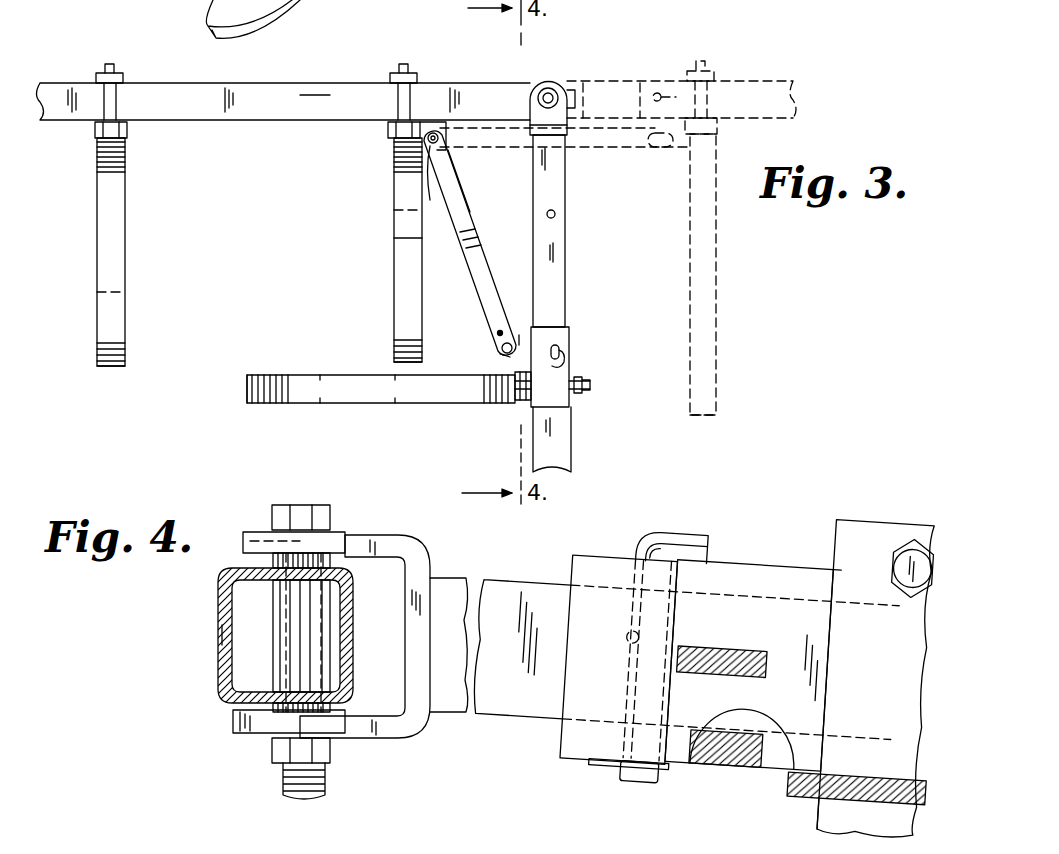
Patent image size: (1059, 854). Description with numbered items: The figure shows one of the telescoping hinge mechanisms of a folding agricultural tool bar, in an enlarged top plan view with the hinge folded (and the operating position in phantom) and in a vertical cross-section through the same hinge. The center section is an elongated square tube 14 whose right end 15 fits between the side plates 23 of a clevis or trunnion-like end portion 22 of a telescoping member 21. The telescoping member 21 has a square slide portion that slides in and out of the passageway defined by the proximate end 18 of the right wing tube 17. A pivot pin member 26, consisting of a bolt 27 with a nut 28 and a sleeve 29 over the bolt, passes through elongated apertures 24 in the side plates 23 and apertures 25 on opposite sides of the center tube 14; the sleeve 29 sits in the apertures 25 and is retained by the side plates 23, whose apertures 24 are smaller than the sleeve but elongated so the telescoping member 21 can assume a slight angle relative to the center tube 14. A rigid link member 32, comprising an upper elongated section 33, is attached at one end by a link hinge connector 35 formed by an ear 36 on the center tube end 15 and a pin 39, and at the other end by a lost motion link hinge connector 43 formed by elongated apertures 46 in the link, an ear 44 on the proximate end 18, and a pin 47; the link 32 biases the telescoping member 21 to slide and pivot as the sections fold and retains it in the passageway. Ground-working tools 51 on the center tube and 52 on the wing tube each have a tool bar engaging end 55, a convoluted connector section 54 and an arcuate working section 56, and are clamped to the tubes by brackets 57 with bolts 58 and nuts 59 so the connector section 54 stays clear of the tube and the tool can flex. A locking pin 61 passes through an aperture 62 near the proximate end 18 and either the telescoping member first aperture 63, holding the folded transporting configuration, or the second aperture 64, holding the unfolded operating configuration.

In FIG. 4, the center tube 14 is at (220, 598).
In FIG. 3, the right end 15 is at (508, 105).
In FIG. 4, the right end 15 is at (220, 632).
In FIG. 3, the right wing tube 17 is at (770, 80).
In FIG. 4, the right wing tube 17 is at (745, 565).
In FIG. 3, the proximate end 18 is at (570, 335).
In FIG. 4, the proximate end 18 is at (722, 715).
In FIG. 3, the telescoping member 21 is at (615, 82).
In FIG. 4, the telescoping member 21 is at (445, 578).
In FIG. 3, the clevis end portion 22 is at (548, 82).
In FIG. 4, the clevis end portion 22 is at (426, 548).
In FIG. 3, the side plates 23 is at (548, 88).
In FIG. 4, the side plates 23 is at (260, 530).
In FIG. 4, the side plate apertures 24 is at (243, 541).
In FIG. 4, the center tube apertures 25 is at (268, 585).
In FIG. 3, the pivot pin member 26 is at (538, 97).
In FIG. 4, the pivot pin member 26 is at (303, 480).
In FIG. 3, the bolt 27 is at (560, 98).
In FIG. 4, the bolt 27 is at (332, 518).
In FIG. 4, the nut 28 is at (332, 752).
In FIG. 4, the sleeve 29 is at (292, 635).
In FIG. 3, the rigid link member 32 is at (483, 216).
In FIG. 3, the upper elongated section 33 is at (482, 195).
In FIG. 3, the link hinge connector 35 is at (435, 184).
In FIG. 3, the ear 36 is at (440, 128).
In FIG. 3, the pin 39 is at (432, 133).
In FIG. 3, the lost motion link hinge connector 43 is at (508, 356).
In FIG. 3, the ear 44 is at (524, 338).
In FIG. 4, the ear 44 is at (718, 650).
In FIG. 3, the elongated apertures 46 is at (500, 332).
In FIG. 3, the pin 47 is at (505, 348).
In FIG. 3, the ground-working tool 51 is at (393, 242).
In FIG. 3, the ground-working tool 52 is at (320, 375).
In FIG. 4, the ground-working tool 52 is at (880, 520).
In FIG. 3, the convoluted connector section 54 is at (127, 215).
In FIG. 4, the convoluted connector section 54 is at (815, 810).
In FIG. 3, the tool bar engaging end 55 is at (127, 130).
In FIG. 4, the tool bar engaging end 55 is at (832, 540).
In FIG. 3, the arcuate working section 56 is at (118, 368).
In FIG. 3, the bracket 57 is at (118, 75).
In FIG. 4, the bracket 57 is at (870, 792).
In FIG. 3, the bolt 58 is at (118, 104).
In FIG. 4, the bolt 58 is at (892, 565).
In FIG. 3, the nut 59 is at (104, 72).
In FIG. 3, the locking pin 61 is at (548, 366).
In FIG. 4, the locking pin 61 is at (650, 520).
In FIG. 3, the aperture 62 is at (563, 352).
In FIG. 4, the aperture 62 is at (636, 550).
In FIG. 4, the telescoping member first aperture 63 is at (630, 630).
In FIG. 3, the telescoping member second aperture 64 is at (555, 214).